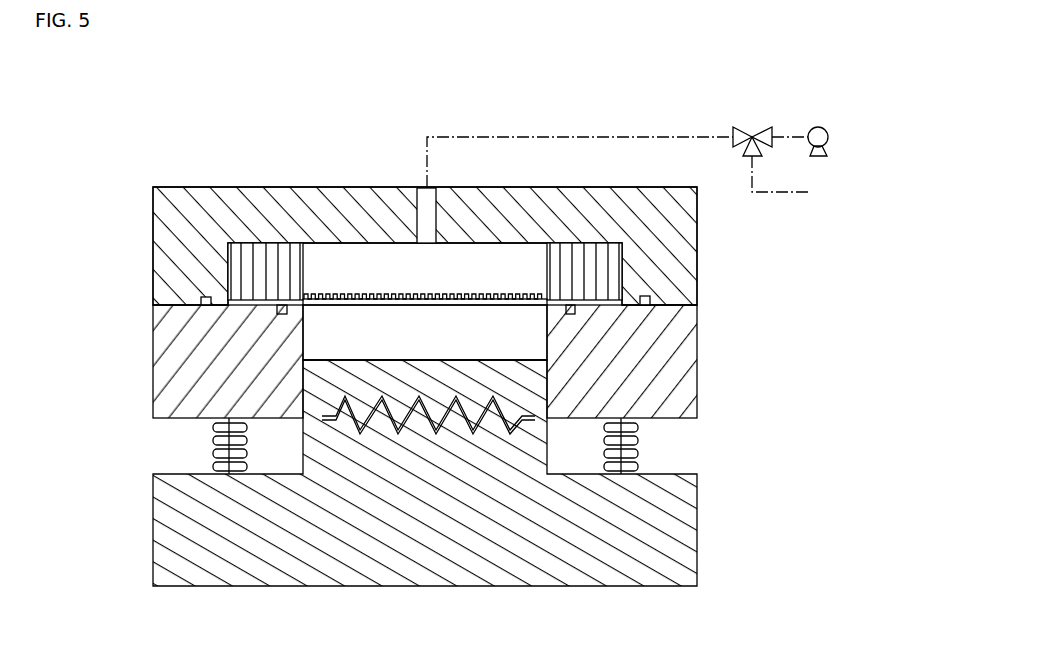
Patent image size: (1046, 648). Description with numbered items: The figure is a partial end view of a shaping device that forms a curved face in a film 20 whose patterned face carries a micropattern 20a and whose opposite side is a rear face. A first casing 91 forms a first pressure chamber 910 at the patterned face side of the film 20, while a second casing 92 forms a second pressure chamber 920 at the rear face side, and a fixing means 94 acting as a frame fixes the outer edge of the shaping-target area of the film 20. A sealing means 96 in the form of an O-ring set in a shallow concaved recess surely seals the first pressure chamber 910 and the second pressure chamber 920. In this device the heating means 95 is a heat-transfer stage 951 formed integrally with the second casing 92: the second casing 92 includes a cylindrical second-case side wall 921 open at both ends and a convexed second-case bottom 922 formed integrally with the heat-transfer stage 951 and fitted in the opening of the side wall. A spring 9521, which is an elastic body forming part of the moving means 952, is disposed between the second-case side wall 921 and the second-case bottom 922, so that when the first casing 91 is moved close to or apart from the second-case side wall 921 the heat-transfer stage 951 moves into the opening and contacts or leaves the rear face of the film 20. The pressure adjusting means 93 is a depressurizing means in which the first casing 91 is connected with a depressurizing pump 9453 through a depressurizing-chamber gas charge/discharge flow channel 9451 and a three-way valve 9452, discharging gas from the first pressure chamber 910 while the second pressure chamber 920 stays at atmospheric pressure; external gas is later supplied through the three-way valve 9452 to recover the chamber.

The first casing 91 is at (178, 246).
The first pressure chamber 910 is at (400, 282).
The fixing means 94 is at (262, 270).
The film 20 is at (320, 299).
The micropattern 20a is at (358, 297).
The sealing means 96 is at (575, 312).
The second casing 92 is at (495, 445).
The second-case side wall 921 is at (678, 376).
The second-case bottom 922 is at (684, 508).
The second pressure chamber 920 is at (498, 337).
The heat-transfer stage 951 is at (355, 358).
The moving means 952 is at (528, 446).
The spring 9521 is at (640, 434).
The heating means 95 is at (441, 430).
The pressure adjusting means 93 is at (645, 101).
The depressurizing-chamber gas charge/discharge flow channel 9451 is at (550, 137).
The three-way valve 9452 is at (746, 127).
The depressurizing pump 9453 is at (818, 127).